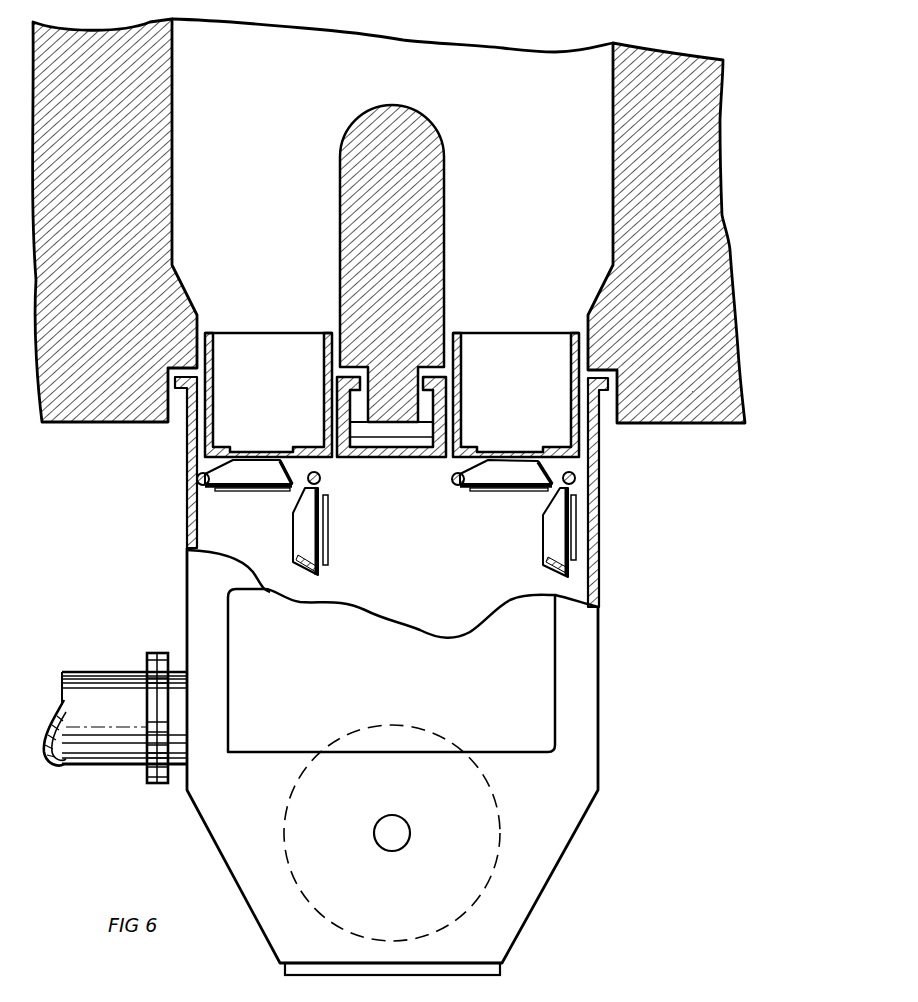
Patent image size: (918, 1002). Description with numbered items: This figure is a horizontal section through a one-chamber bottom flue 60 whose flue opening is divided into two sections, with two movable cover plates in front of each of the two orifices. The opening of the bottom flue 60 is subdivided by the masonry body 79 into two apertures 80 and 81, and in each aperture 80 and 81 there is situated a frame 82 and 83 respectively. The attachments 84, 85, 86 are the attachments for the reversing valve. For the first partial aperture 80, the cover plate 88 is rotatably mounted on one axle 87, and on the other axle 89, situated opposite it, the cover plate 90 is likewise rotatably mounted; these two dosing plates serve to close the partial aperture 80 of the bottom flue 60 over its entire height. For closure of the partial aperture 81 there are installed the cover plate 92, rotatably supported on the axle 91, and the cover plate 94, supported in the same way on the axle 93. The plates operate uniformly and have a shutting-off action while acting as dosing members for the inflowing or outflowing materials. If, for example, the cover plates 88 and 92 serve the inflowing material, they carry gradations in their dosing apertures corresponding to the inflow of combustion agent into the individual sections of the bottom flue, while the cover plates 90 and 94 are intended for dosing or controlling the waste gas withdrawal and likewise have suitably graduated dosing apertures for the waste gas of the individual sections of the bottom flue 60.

The one-chamber bottom flue 60 is at (590, 58).
The masonry body 79 is at (440, 152).
The aperture 80 is at (300, 251).
The aperture 81 is at (536, 251).
The frame 82 is at (214, 389).
The frame 83 is at (461, 393).
The attachment for the reversing valve 84 is at (187, 470).
The attachment for the reversing valve 85 is at (599, 474).
The attachment for the reversing valve 86 is at (396, 458).
The axle 87 is at (206, 484).
The cover plate 88 is at (253, 472).
The axle 89 is at (320, 478).
The cover plate 90 is at (323, 515).
The axle 91 is at (457, 485).
The cover plate 92 is at (502, 475).
The axle 93 is at (337, 730).
The cover plate 94 is at (556, 540).